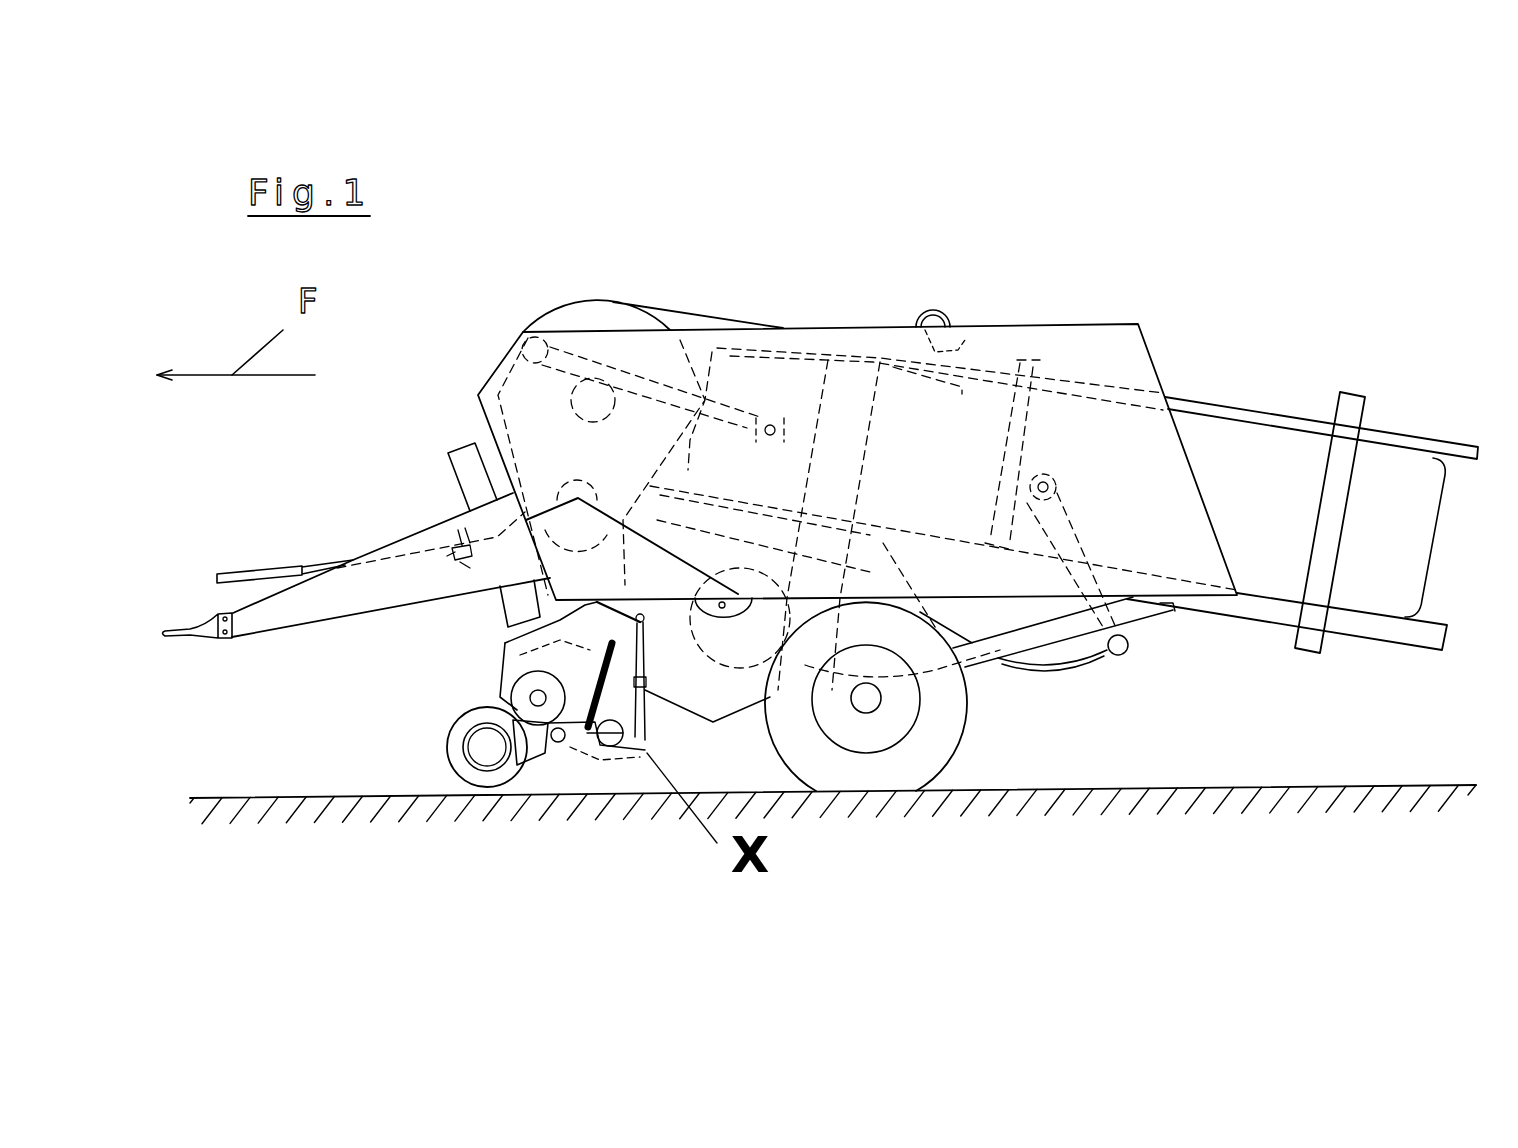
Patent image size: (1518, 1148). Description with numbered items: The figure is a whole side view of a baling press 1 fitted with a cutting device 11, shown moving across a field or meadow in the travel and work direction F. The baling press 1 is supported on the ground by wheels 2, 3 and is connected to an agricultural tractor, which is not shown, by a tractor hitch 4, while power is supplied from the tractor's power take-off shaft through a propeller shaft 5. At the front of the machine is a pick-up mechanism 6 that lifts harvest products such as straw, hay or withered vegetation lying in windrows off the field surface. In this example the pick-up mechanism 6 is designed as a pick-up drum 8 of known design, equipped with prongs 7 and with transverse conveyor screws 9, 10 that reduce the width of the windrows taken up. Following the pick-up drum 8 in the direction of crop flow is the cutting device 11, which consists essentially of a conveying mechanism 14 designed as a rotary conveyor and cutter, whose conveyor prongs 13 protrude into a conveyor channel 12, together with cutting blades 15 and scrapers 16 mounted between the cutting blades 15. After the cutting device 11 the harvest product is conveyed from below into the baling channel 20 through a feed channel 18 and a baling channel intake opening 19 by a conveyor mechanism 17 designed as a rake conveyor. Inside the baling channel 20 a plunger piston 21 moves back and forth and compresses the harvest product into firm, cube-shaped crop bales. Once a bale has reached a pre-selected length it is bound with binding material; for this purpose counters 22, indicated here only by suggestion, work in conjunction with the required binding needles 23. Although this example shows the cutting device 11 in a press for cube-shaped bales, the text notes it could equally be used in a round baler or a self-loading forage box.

The baling press 1 is at (913, 250).
The wheel 2 is at (882, 761).
The wheel 3 is at (907, 770).
The tractor hitch 4 is at (290, 620).
The propeller shaft 5 is at (260, 573).
The pick-up mechanism 6 is at (417, 742).
The prongs 7 is at (457, 723).
The pick-up drum 8 is at (460, 755).
The transverse conveyor screw 9 is at (491, 664).
The transverse conveyor screw 10 is at (507, 653).
The cutting device 11 is at (560, 758).
The conveyor channel 12 is at (647, 675).
The conveyor prongs 13 is at (507, 648).
The conveying mechanism 14 is at (562, 622).
The cutting blades 15 is at (575, 732).
The scrapers 16 is at (615, 628).
The conveyor mechanism 17 is at (760, 703).
The feed channel 18 is at (797, 690).
The baling channel intake opening 19 is at (842, 537).
The baling channel 20 is at (957, 467).
The plunger piston 21 is at (743, 350).
The counters 22 is at (948, 308).
The binding needles 23 is at (1083, 663).